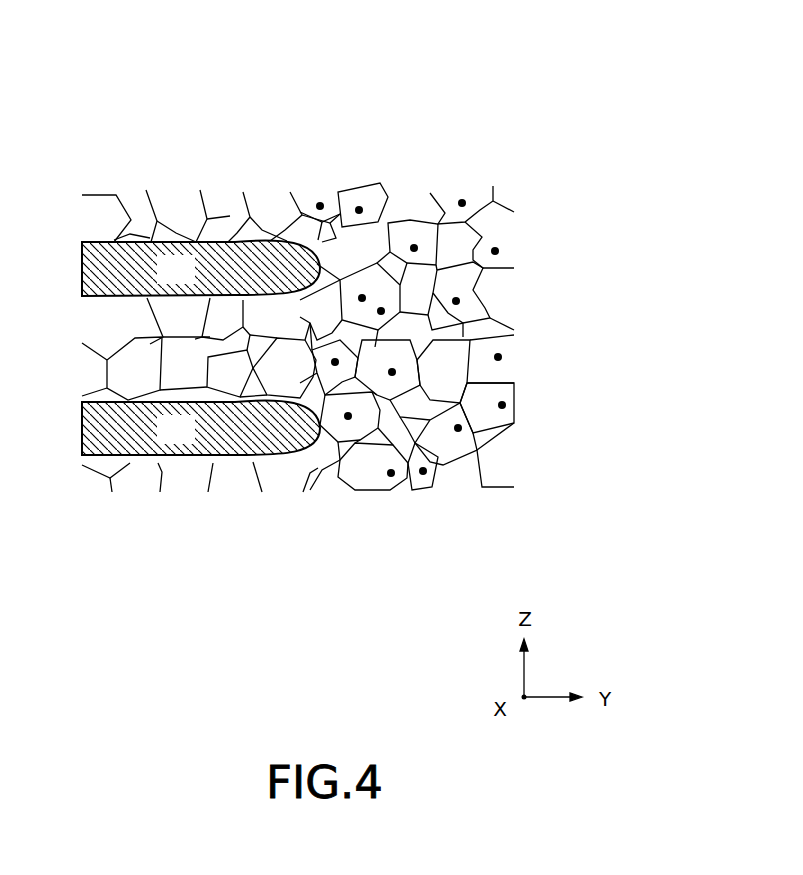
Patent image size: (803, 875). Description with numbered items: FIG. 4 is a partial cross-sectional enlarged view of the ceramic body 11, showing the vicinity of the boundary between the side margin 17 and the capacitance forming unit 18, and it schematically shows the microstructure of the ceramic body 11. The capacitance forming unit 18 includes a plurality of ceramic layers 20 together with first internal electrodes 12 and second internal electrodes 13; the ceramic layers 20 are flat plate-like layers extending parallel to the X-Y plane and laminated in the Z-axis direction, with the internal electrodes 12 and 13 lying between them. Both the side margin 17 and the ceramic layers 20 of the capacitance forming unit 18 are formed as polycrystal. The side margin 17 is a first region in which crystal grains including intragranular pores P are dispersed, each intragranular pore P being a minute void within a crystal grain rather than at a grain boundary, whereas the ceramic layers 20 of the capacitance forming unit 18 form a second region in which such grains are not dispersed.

The ceramic body 11 is at (348, 100).
The first internal electrode 12 is at (194, 281).
The second internal electrode 13 is at (194, 441).
The side margin 17 is at (320, 501).
The capacitance forming unit 18 is at (314, 501).
The ceramic layer 20 is at (194, 226).
The intragranular pore P is at (416, 240).